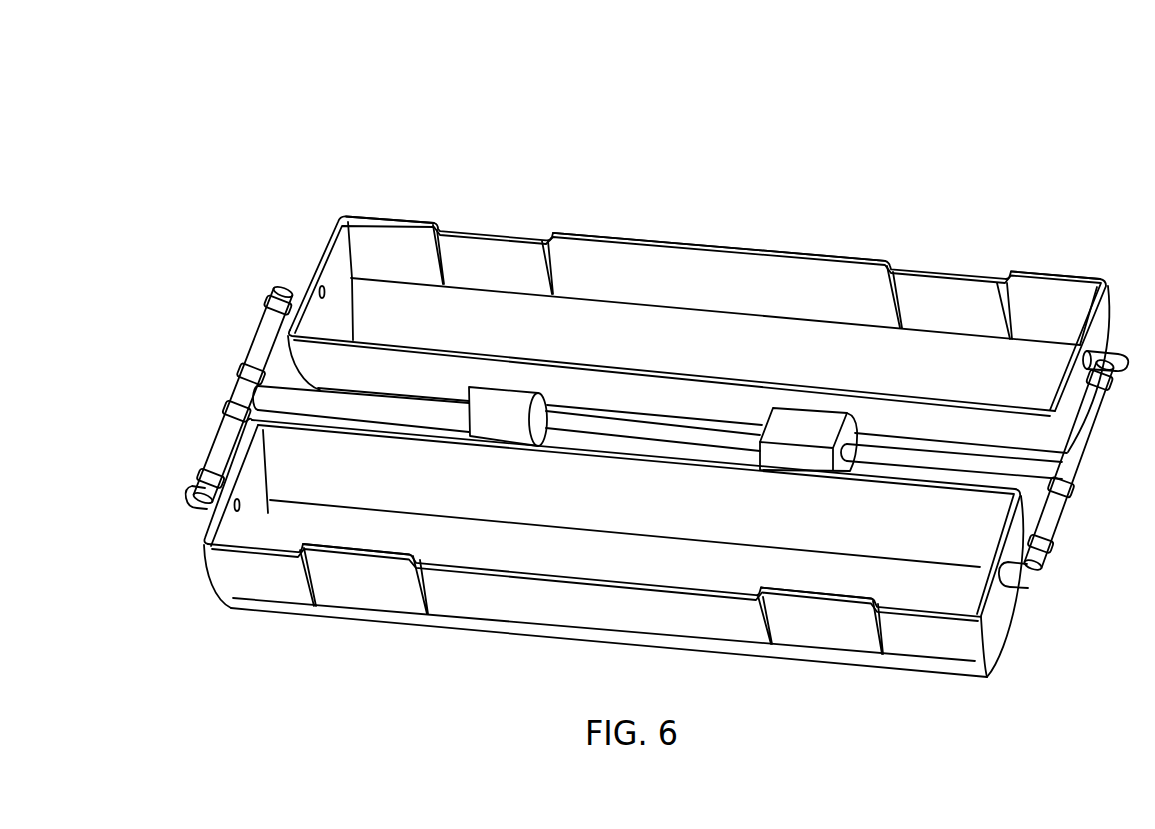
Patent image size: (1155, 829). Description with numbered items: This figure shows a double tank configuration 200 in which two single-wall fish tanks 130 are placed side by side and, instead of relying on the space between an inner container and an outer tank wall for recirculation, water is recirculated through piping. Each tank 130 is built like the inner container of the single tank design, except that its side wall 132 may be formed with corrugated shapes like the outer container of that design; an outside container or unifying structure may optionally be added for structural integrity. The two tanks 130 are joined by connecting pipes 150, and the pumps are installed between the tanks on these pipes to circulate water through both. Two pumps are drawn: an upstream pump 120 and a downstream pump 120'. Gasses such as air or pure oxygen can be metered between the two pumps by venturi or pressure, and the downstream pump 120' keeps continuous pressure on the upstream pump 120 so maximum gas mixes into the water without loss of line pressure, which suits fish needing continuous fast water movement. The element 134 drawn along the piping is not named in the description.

The double tank configuration 200 is at (889, 98).
The upstream pump 120 is at (508, 315).
The downstream pump 120' is at (821, 343).
The tank 130 is at (388, 250).
The side wall 132 is at (638, 250).
The shaft 134 is at (646, 430).
The connecting pipes 150 is at (267, 327).